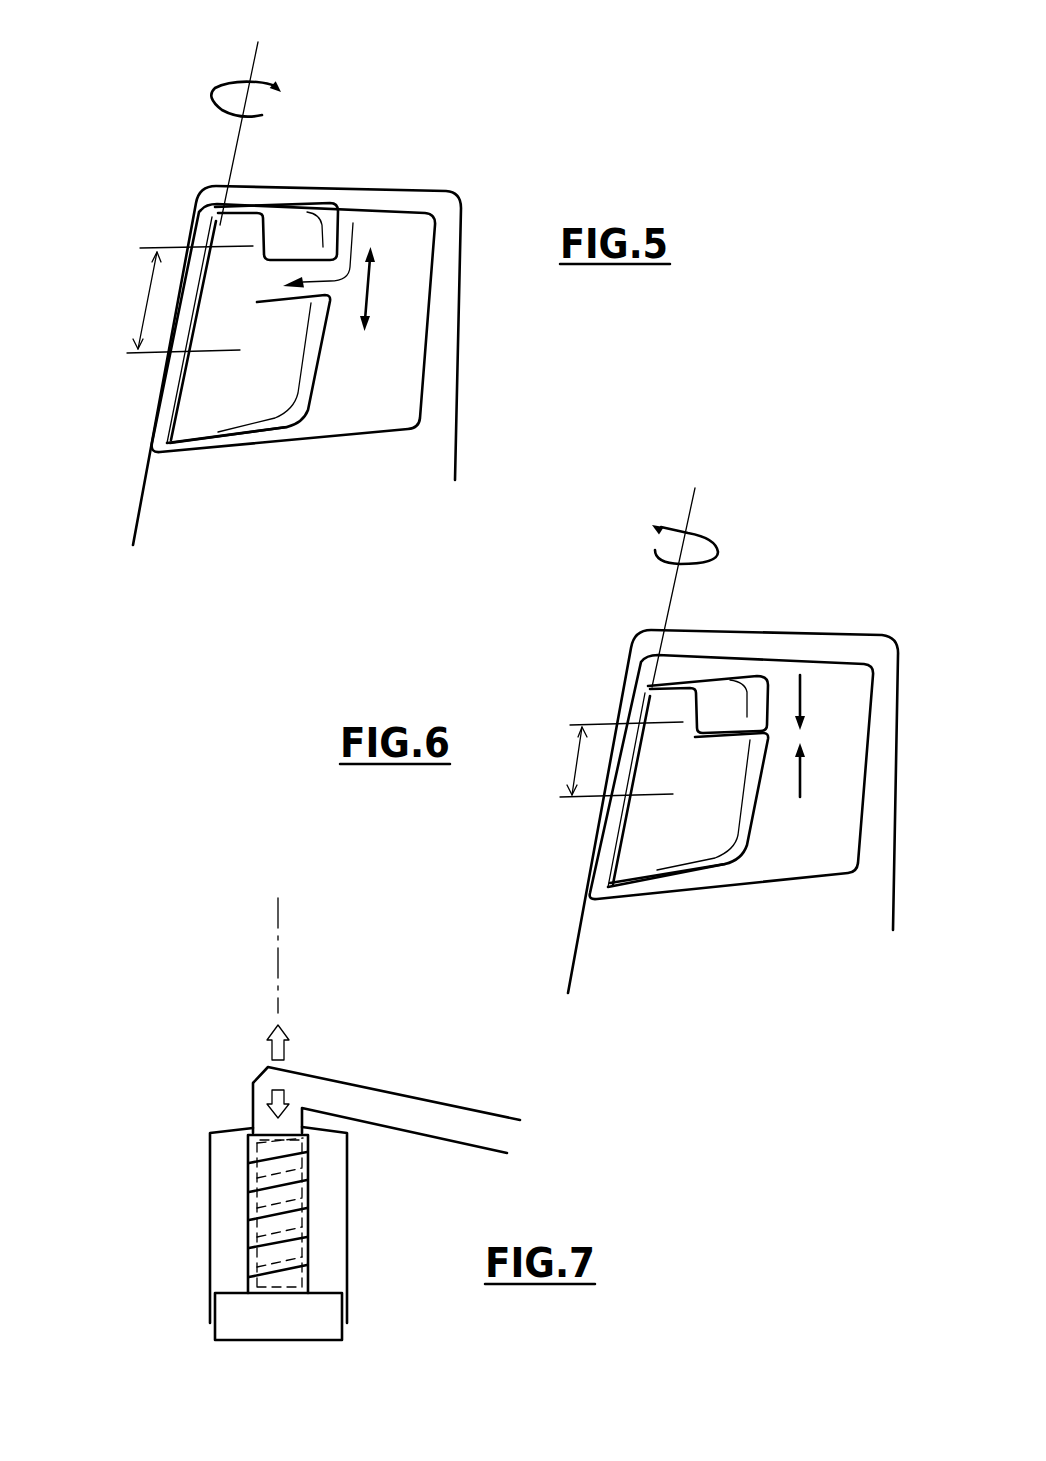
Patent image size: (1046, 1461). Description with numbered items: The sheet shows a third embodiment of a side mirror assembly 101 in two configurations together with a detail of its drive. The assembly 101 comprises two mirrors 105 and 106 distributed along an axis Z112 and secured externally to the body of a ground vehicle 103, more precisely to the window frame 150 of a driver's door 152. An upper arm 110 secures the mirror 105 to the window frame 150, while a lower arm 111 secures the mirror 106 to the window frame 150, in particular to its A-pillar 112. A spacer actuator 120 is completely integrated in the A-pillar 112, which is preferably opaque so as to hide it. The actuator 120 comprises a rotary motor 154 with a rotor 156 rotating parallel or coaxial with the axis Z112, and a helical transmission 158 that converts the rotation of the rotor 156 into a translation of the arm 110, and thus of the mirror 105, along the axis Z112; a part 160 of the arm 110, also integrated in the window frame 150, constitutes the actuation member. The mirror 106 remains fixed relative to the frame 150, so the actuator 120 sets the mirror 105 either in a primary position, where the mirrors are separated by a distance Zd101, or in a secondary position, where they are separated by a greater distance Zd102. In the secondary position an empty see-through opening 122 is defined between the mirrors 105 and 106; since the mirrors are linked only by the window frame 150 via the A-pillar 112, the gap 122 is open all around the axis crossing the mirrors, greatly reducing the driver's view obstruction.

In FIG. 5, the side mirror assembly 101 is at (100, 232).
In FIG. 6, the side mirror assembly 101 is at (540, 680).
In FIG. 5, the ground vehicle 103 is at (452, 280).
In FIG. 6, the ground vehicle 103 is at (885, 680).
In FIG. 5, the mirror 105 is at (288, 242).
In FIG. 6, the mirror 105 is at (727, 707).
In FIG. 5, the mirror 106 is at (283, 347).
In FIG. 6, the mirror 106 is at (717, 797).
In FIG. 5, the upper arm 110 is at (256, 322).
In FIG. 6, the upper arm 110 is at (727, 763).
In FIG. 7, the upper arm 110 is at (380, 1108).
In FIG. 5, the lower arm 111 is at (200, 443).
In FIG. 6, the lower arm 111 is at (633, 887).
In FIG. 5, the A-pillar 112 is at (160, 397).
In FIG. 6, the A-pillar 112 is at (598, 843).
In FIG. 5, the spacer actuator 120 is at (183, 217).
In FIG. 6, the spacer actuator 120 is at (620, 664).
In FIG. 7, the spacer actuator 120 is at (241, 1238).
In FIG. 5, the see-through opening 122 is at (353, 223).
In FIG. 5, the window frame 150 is at (212, 193).
In FIG. 6, the window frame 150 is at (650, 637).
In FIG. 7, the window frame 150 is at (330, 1195).
In FIG. 5, the driver's door 152 is at (360, 450).
In FIG. 6, the driver's door 152 is at (820, 893).
In FIG. 7, the rotary motor 154 is at (233, 1310).
In FIG. 7, the rotor 156 is at (247, 1260).
In FIG. 7, the helical transmission 158 is at (253, 1227).
In FIG. 7, the part of the arm 160 is at (224, 1165).
In FIG. 5, the axis Z112 is at (248, 114).
In FIG. 6, the axis Z112 is at (687, 568).
In FIG. 7, the axis Z112 is at (284, 934).
In FIG. 6, the distance Zd101 is at (593, 759).
In FIG. 5, the distance Zd102 is at (164, 299).